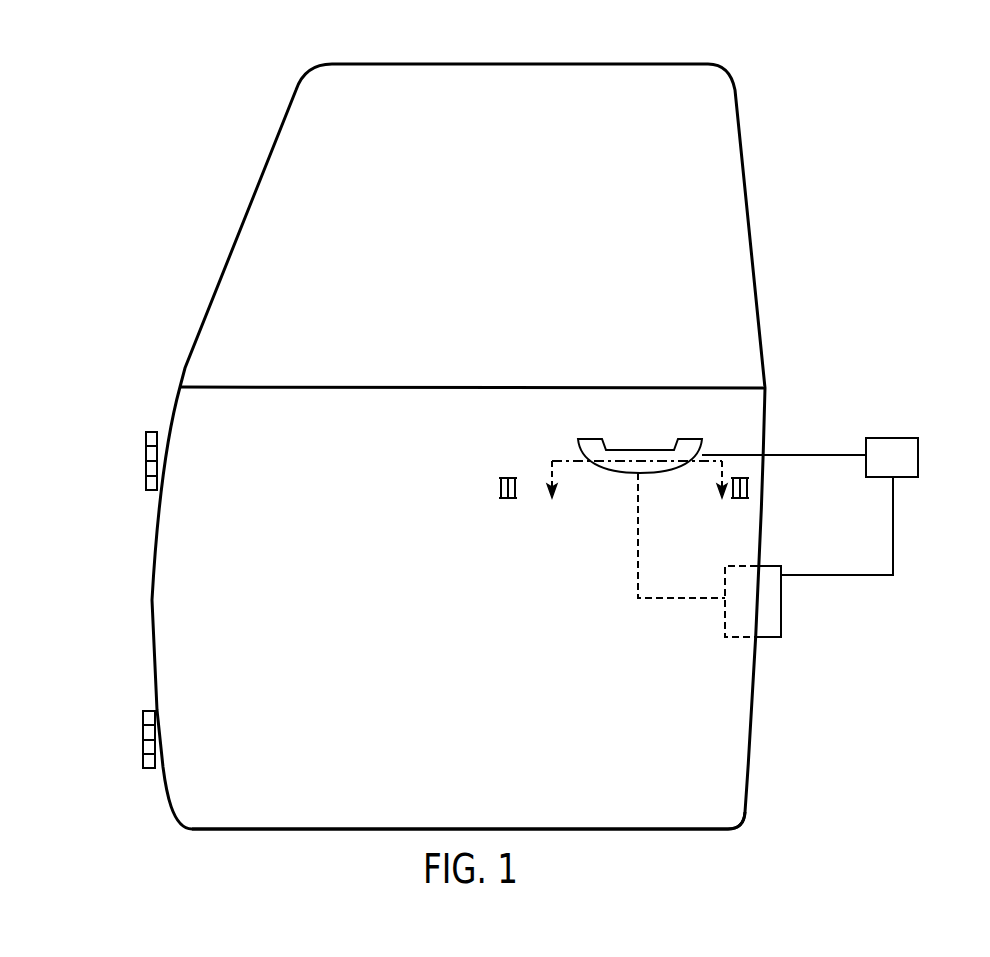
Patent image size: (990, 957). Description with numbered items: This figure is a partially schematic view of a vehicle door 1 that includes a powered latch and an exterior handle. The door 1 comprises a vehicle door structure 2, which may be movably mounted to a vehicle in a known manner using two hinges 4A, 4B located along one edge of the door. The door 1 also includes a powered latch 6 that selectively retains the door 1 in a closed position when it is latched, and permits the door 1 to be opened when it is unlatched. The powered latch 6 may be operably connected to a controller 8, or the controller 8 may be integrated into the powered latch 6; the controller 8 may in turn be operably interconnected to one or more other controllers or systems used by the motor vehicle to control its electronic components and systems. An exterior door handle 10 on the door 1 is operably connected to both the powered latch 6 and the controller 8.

The vehicle door 1 is at (753, 721).
The vehicle door structure 2 is at (727, 785).
The hinge 4A is at (145, 472).
The hinge 4B is at (143, 735).
The powered latch 6 is at (781, 617).
The controller 8 is at (893, 447).
The exterior door handle 10 is at (616, 474).